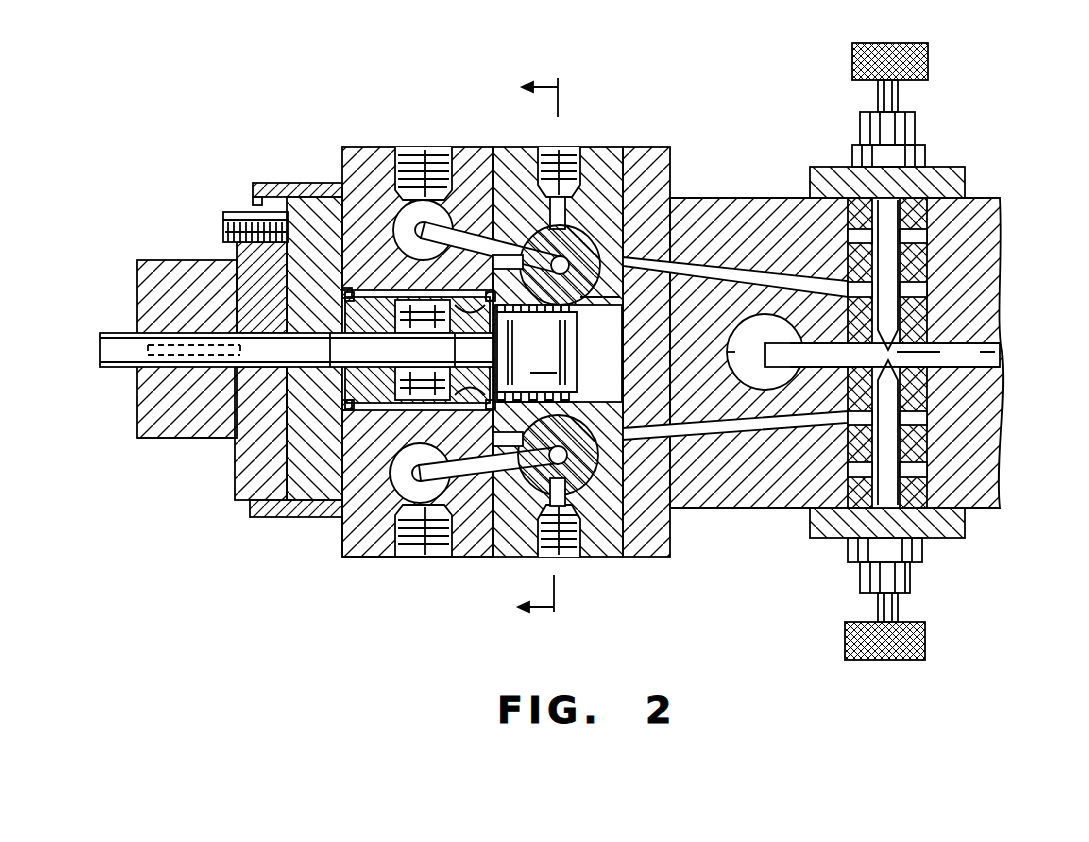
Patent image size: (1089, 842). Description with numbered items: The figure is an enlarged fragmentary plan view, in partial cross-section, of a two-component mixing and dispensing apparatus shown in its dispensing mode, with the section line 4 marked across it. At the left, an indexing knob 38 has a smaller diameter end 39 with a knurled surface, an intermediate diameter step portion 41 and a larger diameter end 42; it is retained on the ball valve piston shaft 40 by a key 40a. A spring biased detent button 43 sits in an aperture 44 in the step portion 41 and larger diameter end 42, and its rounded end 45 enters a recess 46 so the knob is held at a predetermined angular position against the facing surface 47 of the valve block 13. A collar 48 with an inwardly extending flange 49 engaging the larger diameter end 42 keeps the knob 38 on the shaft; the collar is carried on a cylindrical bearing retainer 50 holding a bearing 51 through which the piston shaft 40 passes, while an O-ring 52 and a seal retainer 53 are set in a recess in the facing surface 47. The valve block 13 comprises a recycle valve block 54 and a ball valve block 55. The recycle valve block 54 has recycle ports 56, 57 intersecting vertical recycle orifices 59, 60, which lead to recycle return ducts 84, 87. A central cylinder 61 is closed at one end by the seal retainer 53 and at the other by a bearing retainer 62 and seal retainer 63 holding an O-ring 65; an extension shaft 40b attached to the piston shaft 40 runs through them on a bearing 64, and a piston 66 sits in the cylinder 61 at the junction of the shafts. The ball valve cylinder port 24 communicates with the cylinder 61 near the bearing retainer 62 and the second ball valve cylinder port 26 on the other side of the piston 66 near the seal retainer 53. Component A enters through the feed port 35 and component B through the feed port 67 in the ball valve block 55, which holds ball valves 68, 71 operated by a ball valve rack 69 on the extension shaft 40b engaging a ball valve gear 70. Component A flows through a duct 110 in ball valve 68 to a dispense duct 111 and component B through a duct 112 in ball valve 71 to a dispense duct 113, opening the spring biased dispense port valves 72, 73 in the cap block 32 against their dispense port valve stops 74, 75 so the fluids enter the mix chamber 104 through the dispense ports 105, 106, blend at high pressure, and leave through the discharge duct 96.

The section line 4- 4 is at (549, 352).
The valve block 13 is at (498, 568).
The ball valve cylinder port 24 is at (433, 310).
The second ball valve cylinder port 26 is at (390, 415).
The cap block 32 is at (767, 508).
The feed port 35 is at (538, 555).
The indexing knob 38 is at (143, 422).
The smaller diameter end 39 is at (173, 440).
The ball valve piston shaft 40 is at (105, 332).
The key 40a is at (148, 386).
The extension shaft 40b is at (398, 370).
The intermediate diameter step portion 41 is at (235, 463).
The larger diameter end 42 is at (265, 505).
The spring biased detent button 43 is at (227, 244).
The aperture 44 is at (240, 226).
The end 45 is at (297, 215).
The recess 46 is at (277, 242).
The facing surface 47 is at (335, 545).
The collar 48 is at (268, 185).
The inwardly extending flange 49 is at (253, 202).
The cylindrical bearing retainer 50 is at (322, 208).
The bearing 51 is at (327, 366).
The O-ring 52 is at (343, 410).
The seal retainer 53 is at (342, 302).
The recycle valve block 54 is at (362, 556).
The ball valve block 55 is at (608, 558).
The recycle port 56 is at (406, 556).
The recycle port 57 is at (412, 150).
The recycle orifice 59 is at (424, 478).
The recycle orifice 60 is at (424, 225).
The cylinder 61 is at (412, 403).
The bearing retainer 62 is at (488, 300).
The seal retainer 63 is at (488, 408).
The bearing 64 is at (472, 380).
The O-ring 65 is at (500, 320).
The piston 66 is at (388, 328).
The feed port 67 is at (548, 150).
The ball valve 68 is at (576, 465).
The ball valve rack 69 is at (537, 352).
The ball valve gear 70 is at (583, 398).
The ball valve 71 is at (585, 240).
The dispense port valve 72 is at (890, 398).
The dispense port valve 73 is at (890, 312).
The dispense port valve stop 74 is at (858, 552).
The dispense port valve stop 75 is at (858, 150).
The recycle return duct 84 is at (462, 460).
The recycle return duct 87 is at (468, 247).
The discharge duct 96 is at (727, 348).
The mix chamber 104 is at (765, 352).
The dispense port 105 is at (890, 355).
The dispense port 106 is at (946, 354).
The duct 110 is at (627, 430).
The dispense duct 111 is at (678, 440).
The duct 112 is at (582, 290).
The dispense duct 113 is at (728, 270).